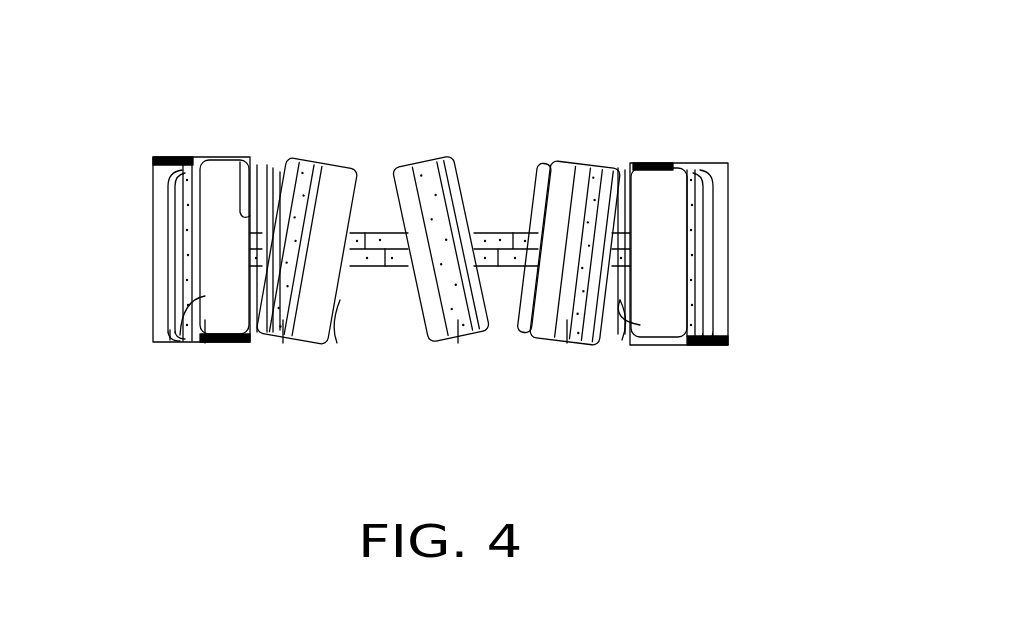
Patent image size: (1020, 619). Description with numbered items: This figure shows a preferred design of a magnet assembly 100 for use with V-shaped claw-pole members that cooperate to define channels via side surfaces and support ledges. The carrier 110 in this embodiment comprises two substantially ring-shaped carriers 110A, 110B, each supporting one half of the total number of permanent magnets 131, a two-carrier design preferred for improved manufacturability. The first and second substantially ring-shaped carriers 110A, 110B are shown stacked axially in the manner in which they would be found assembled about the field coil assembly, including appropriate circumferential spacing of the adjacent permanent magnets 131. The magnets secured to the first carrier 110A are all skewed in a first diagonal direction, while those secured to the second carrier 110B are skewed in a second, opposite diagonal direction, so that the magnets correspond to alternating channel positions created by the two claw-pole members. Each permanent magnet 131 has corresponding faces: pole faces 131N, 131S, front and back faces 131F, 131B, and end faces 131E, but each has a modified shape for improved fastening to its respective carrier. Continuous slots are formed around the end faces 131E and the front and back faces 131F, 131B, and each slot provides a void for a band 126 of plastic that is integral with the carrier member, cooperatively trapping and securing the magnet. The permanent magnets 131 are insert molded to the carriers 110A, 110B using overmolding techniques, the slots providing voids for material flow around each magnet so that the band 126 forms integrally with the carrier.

The magnet assembly 100 is at (116, 134).
The carrier 110 is at (500, 226).
The first substantially ring-shaped carrier 110A is at (260, 242).
The second substantially ring-shaped carrier 110B is at (260, 262).
The band 126 is at (207, 343).
The permanent magnet 131 is at (263, 146).
The back face 131B is at (545, 148).
The end face 131E is at (210, 150).
The front face 131F is at (210, 230).
The pole face 131N is at (187, 293).
The pole face 131S is at (170, 343).